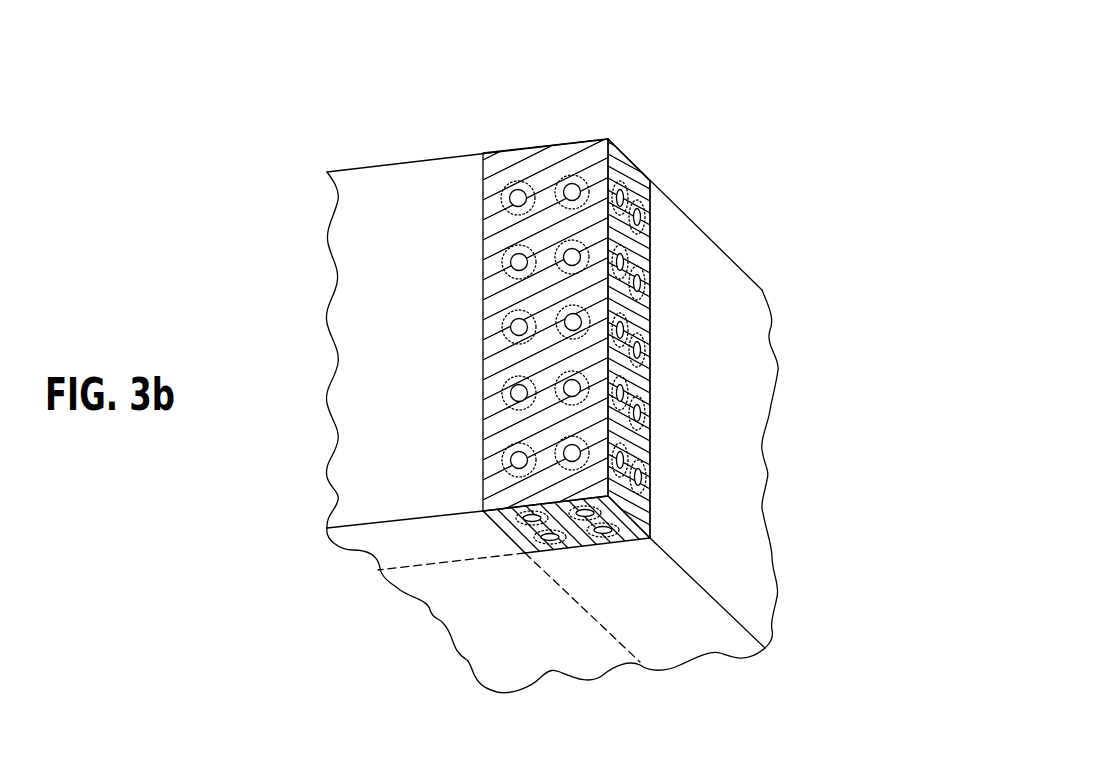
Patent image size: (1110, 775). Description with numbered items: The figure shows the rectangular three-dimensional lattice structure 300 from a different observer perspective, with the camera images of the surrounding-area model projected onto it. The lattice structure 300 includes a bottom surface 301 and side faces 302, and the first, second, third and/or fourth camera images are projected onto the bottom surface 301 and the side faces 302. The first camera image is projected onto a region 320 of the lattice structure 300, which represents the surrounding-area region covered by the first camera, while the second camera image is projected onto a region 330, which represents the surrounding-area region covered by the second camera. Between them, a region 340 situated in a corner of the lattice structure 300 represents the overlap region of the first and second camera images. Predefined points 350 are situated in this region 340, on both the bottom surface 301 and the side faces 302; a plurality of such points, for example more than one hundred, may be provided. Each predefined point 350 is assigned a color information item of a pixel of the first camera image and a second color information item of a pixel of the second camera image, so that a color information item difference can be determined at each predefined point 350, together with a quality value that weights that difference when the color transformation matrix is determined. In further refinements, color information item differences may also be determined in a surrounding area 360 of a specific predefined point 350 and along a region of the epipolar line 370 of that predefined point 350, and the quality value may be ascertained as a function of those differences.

The three-dimensional lattice structure 300 is at (612, 108).
The bottom surface 301 is at (530, 638).
The side faces 302 is at (375, 210).
The region 320 is at (443, 195).
The region 330 is at (715, 270).
The region 340 is at (630, 175).
The predefined points 350 is at (585, 513).
The surrounding area 360 is at (518, 198).
The epipolar line 370 is at (648, 252).